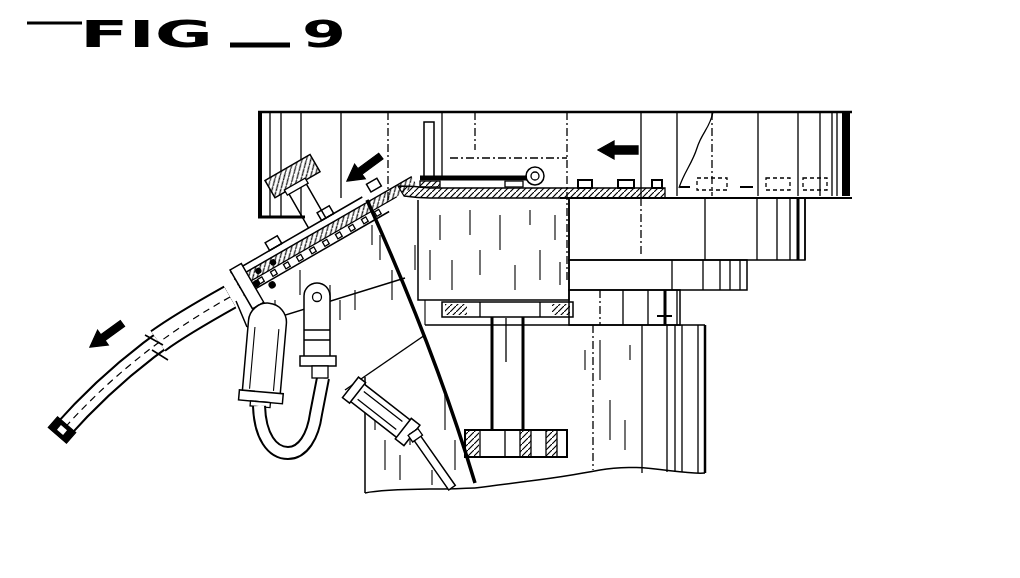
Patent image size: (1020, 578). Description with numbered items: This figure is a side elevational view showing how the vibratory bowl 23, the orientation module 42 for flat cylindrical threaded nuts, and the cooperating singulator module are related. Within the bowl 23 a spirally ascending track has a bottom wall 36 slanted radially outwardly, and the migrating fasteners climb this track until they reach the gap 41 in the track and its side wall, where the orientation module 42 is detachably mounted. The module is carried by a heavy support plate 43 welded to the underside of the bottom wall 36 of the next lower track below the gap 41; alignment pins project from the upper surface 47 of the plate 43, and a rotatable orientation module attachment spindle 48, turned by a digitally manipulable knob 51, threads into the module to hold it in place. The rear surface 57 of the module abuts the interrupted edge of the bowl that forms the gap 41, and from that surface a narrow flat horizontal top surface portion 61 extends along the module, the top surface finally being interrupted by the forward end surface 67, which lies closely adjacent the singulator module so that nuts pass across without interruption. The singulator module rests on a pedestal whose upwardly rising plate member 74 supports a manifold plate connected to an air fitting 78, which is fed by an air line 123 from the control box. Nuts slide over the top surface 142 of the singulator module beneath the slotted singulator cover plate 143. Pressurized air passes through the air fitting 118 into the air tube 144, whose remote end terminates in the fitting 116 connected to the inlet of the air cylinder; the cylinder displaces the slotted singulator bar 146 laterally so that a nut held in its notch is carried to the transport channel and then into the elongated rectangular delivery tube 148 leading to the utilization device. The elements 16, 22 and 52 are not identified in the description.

The vibratory bowl 23 is at (570, 96).
The flat horizontal top surface portion 61 is at (561, 158).
The gap 41 is at (572, 192).
The bottom wall of the track 36 is at (645, 198).
The base block 16 is at (674, 314).
The support member 22 is at (686, 390).
The rear surface of the orientation module 57 is at (567, 246).
The forward end surface of the orientation module 67 is at (407, 284).
The bar 52 is at (458, 302).
The heavy support plate 43 is at (481, 318).
The orientation module 42 is at (547, 292).
The upper surface of the plate 47 is at (505, 373).
The orientation module attachment spindle 48 is at (508, 393).
The knob 51 is at (548, 431).
The air fitting 78 is at (382, 390).
The air line 123 is at (434, 468).
The plate member 74 is at (375, 450).
The air tube 144 is at (283, 450).
The air fitting 118 is at (311, 344).
The fitting 116 is at (265, 353).
The delivery tube 148 is at (107, 402).
The slotted singulator bar 146 is at (234, 278).
The singulator cover plate 143 is at (264, 250).
The top surface of the singulator module 142 is at (320, 296).